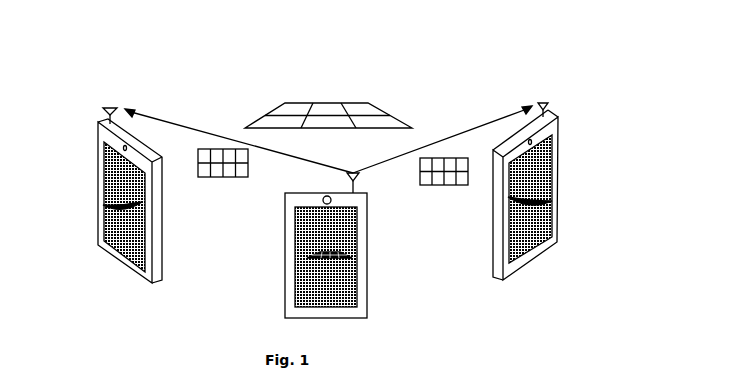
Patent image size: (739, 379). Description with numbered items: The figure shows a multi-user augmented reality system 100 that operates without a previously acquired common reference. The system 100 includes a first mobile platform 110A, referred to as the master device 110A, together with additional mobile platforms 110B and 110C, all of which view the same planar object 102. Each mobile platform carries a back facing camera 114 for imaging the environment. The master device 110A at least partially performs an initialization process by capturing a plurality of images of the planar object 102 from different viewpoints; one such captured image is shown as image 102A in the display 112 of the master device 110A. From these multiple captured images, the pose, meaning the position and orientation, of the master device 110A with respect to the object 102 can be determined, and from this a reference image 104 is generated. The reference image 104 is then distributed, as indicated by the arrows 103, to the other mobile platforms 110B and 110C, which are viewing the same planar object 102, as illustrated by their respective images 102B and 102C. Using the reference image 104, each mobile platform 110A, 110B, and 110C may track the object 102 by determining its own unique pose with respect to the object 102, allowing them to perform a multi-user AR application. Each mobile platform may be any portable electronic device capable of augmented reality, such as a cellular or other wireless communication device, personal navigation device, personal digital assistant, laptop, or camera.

The system 100 is at (170, 54).
The image content 102 is at (377, 105).
The network connection 103 is at (157, 118).
The remote input device 104 is at (227, 178).
The mobile device 110A is at (285, 290).
The mobile device 110B is at (558, 148).
The mobile device 110C is at (98, 162).
The displayed image 102A is at (307, 257).
The displayed image 102B is at (552, 201).
The displayed image 102C is at (103, 206).
The display screen 112 is at (357, 295).
The camera 114 is at (332, 200).